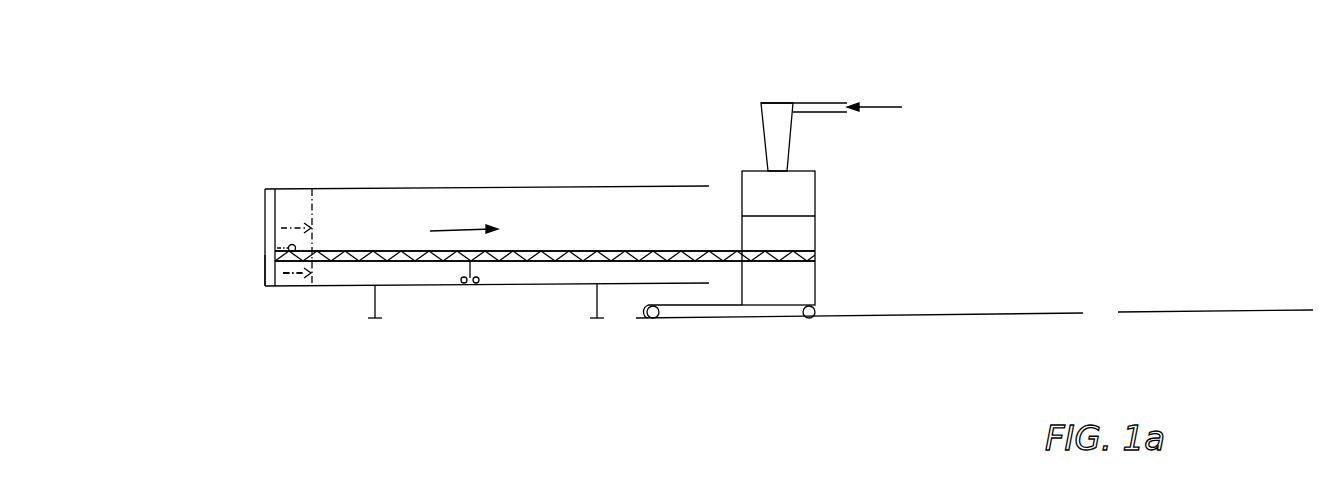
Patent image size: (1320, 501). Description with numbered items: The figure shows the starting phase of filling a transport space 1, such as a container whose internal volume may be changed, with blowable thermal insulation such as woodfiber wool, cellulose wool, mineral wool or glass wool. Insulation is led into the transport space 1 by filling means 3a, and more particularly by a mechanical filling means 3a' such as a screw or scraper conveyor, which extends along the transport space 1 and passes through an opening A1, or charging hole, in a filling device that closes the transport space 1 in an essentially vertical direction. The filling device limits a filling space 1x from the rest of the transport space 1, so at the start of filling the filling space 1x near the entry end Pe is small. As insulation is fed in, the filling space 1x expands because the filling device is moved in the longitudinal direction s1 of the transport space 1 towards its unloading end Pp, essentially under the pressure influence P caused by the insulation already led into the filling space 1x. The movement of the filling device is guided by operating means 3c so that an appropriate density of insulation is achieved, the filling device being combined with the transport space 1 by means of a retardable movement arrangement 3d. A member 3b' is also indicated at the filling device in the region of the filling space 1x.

The transport space 1 is at (490, 180).
The filling space 1x is at (262, 256).
The opening A1 is at (286, 213).
The filling means 3a is at (545, 185).
The mechanical filling means 3a' is at (545, 185).
The sensor roller 3b' is at (350, 176).
The operating means 3c is at (316, 240).
The retardable movement arrangement 3d is at (316, 240).
The longitudinal direction s1 is at (440, 222).
The pressure influence P is at (284, 275).
The product entry position Pe is at (262, 270).
The unloading end Pp is at (713, 205).